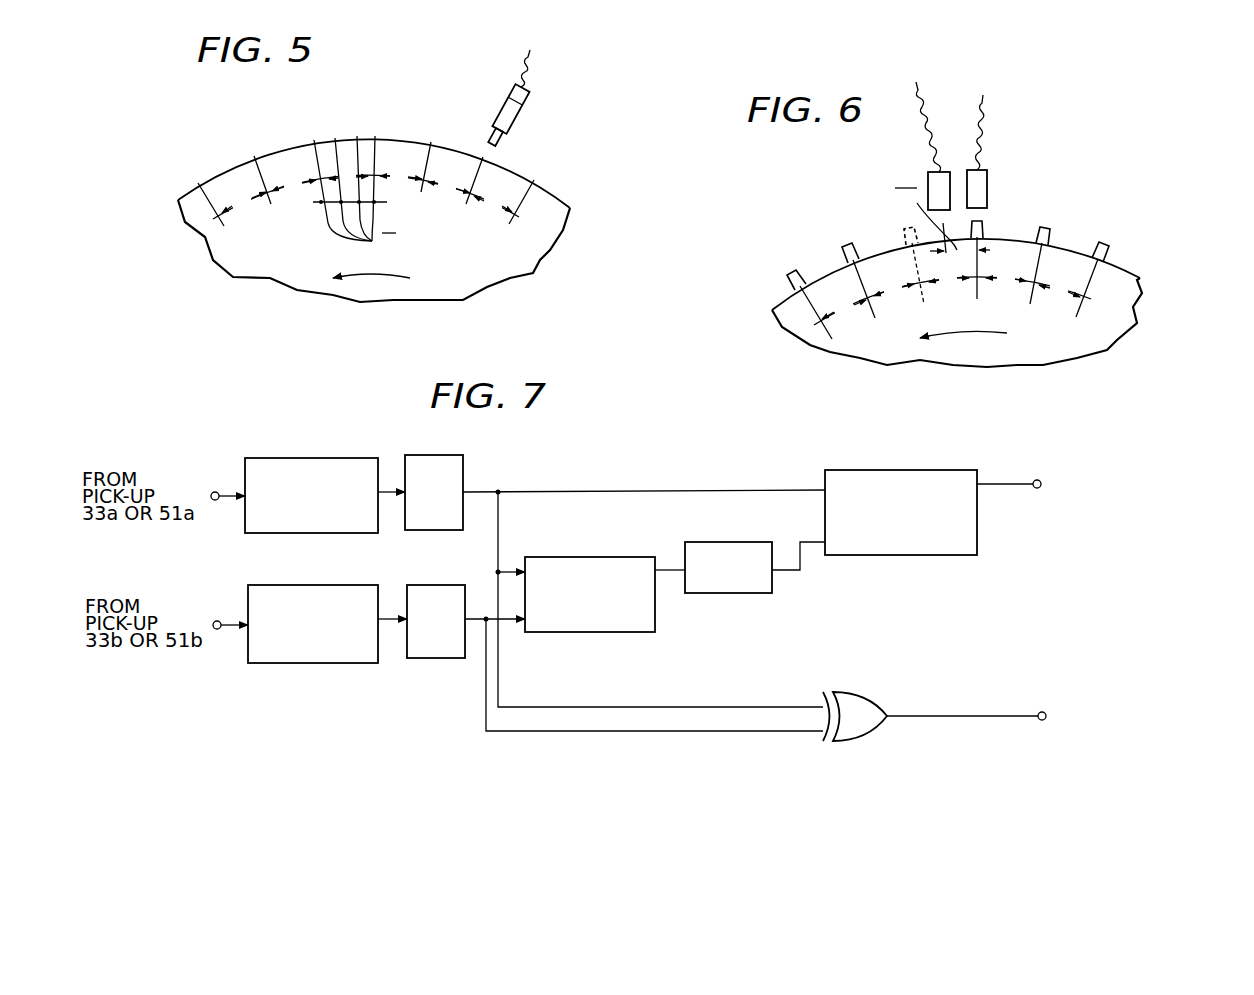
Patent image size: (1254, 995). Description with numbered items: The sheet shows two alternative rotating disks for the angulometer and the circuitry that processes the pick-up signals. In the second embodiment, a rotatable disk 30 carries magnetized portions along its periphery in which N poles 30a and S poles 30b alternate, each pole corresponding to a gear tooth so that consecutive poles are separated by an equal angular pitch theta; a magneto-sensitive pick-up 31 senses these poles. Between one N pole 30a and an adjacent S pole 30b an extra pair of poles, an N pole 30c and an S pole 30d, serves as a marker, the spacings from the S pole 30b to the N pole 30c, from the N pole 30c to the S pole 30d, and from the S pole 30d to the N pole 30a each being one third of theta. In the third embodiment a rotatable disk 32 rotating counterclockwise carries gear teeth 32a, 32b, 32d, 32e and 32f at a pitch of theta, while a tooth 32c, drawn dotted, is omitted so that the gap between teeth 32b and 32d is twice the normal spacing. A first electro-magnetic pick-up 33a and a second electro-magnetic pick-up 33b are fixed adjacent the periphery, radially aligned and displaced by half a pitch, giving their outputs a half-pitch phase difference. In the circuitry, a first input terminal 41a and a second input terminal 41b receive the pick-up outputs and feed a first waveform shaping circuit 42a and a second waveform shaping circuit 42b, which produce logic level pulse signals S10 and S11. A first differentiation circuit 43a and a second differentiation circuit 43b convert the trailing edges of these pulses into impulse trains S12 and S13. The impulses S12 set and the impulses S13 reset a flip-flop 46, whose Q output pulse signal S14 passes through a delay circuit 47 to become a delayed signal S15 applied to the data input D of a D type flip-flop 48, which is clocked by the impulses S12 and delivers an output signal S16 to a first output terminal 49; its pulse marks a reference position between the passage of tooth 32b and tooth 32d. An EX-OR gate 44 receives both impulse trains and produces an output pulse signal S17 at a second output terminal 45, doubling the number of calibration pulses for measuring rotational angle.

In FIG. 5, the rotatable disk 30 is at (497, 269).
In FIG. 5, the N poles 30a is at (256, 160).
In FIG. 5, the S poles 30b is at (200, 188).
In FIG. 5, the N pole 30c is at (335, 142).
In FIG. 5, the S pole 30d is at (357, 140).
In FIG. 5, the magneto-sensitive pick-up 31 is at (526, 105).
In FIG. 6, the rotatable disk 32 is at (1081, 340).
In FIG. 6, the gear tooth 32a is at (791, 274).
In FIG. 6, the gear tooth 32b is at (846, 249).
In FIG. 6, the omitted tooth 32c is at (905, 232).
In FIG. 6, the gear tooth 32d is at (983, 226).
In FIG. 6, the gear tooth 32e is at (1048, 230).
In FIG. 6, the gear tooth 32f is at (1104, 246).
In FIG. 6, the first electro-magnetic pick-up 33a is at (930, 183).
In FIG. 6, the second electro-magnetic pick-up 33b is at (987, 177).
In FIG. 7, the first input terminal 41a is at (216, 491).
In FIG. 7, the second input terminal 41b is at (218, 620).
In FIG. 7, the first waveform shaping circuit 42a is at (318, 458).
In FIG. 7, the second waveform shaping circuit 42b is at (318, 585).
In FIG. 7, the first differentiation circuit 43a is at (430, 441).
In FIG. 7, the second differentiation circuit 43b is at (422, 585).
In FIG. 7, the EX-OR gate 44 is at (863, 698).
In FIG. 7, the second output terminal 45 is at (1040, 712).
In FIG. 7, the flip-flop 46 is at (600, 557).
In FIG. 7, the delay circuit 47 is at (720, 542).
In FIG. 7, the D type flip-flop 48 is at (922, 470).
In FIG. 7, the first output terminal 49 is at (1036, 480).
In FIG. 7, the logic level pulse signal S10 is at (386, 488).
In FIG. 7, the logic level pulse signal S11 is at (388, 623).
In FIG. 7, the first train of impulses S12 is at (480, 492).
In FIG. 7, the second train of impulses S13 is at (477, 622).
In FIG. 7, the output pulse signal S14 is at (668, 572).
In FIG. 7, the delayed signal S15 is at (790, 571).
In FIG. 7, the output signal S16 is at (1000, 485).
In FIG. 7, the output pulse signal S17 is at (935, 716).